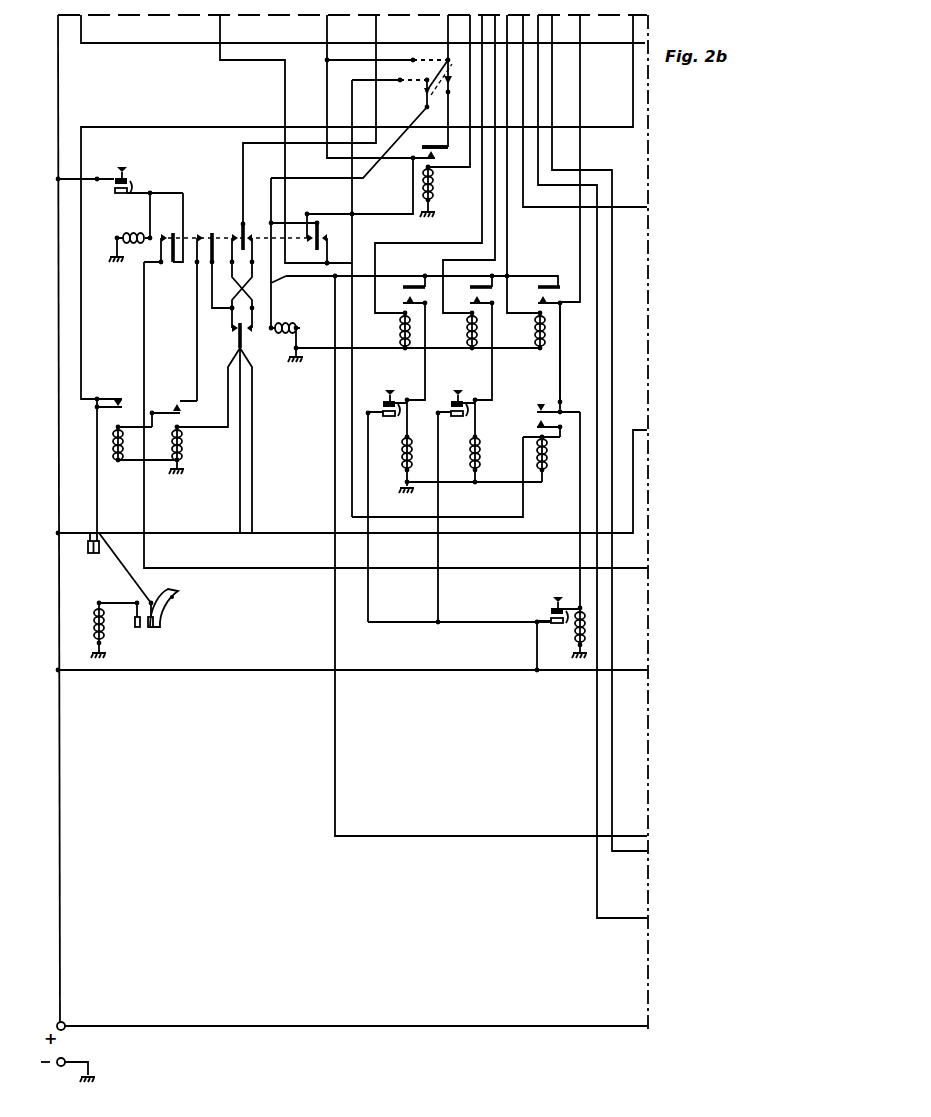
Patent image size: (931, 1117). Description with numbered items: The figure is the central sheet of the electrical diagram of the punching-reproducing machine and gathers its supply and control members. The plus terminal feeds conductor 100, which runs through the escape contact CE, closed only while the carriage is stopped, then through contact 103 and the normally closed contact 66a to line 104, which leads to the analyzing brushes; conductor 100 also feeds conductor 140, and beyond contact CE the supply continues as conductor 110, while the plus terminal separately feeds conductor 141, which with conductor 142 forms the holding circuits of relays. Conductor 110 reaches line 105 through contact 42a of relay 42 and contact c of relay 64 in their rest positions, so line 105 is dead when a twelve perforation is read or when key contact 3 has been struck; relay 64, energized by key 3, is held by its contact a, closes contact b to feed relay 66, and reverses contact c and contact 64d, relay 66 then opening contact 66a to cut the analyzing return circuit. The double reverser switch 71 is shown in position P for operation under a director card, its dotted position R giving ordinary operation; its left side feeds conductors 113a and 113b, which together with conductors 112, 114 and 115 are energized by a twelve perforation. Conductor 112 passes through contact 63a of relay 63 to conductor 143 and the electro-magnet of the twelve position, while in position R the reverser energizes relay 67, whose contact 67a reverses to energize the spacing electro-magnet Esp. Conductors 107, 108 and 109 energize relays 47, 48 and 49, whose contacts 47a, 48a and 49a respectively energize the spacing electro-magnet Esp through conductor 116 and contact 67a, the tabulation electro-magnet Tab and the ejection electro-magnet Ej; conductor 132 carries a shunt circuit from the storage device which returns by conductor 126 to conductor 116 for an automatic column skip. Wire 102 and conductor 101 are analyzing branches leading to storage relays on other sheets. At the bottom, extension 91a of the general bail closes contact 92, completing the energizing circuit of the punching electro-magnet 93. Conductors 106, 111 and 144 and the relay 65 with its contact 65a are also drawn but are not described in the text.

The conductor 100 is at (61, 835).
The conductor 141 is at (198, 1026).
The conductor 132 is at (117, 43).
The conductor 115 is at (285, 92).
The conductor 143 is at (327, 92).
The line 105 is at (243, 148).
The line 104 is at (82, 325).
The conductor 126 is at (578, 75).
The conductor 112 is at (448, 120).
The connecting line 111 is at (458, 170).
The conductor 109 is at (440, 237).
The conductor 108 is at (443, 260).
The conductor 107 is at (507, 240).
The connecting line 106 is at (553, 207).
The wire 102 is at (611, 918).
The conductor 101 is at (613, 762).
The conductor 114 is at (335, 305).
The conductor 113b is at (528, 277).
The conductor 113a is at (364, 182).
The reverser position R is at (378, 289).
The double reverser switch 71 is at (425, 100).
The reverser position P is at (439, 88).
The contact 63a is at (437, 156).
The relay 63 is at (433, 190).
The connecting line 144 is at (375, 214).
The contact 64d is at (323, 221).
The reversing contact of relay 64 c is at (245, 228).
The contact of relay 64 b is at (199, 232).
The holding contact of relay 64 a is at (165, 232).
The relay 64 is at (134, 231).
The key contact 3 is at (119, 179).
The conductor 110 is at (183, 533).
The conductor 142 is at (246, 570).
The conductor 140 is at (172, 670).
The escape contact CE is at (94, 532).
The extension of general bail 91a is at (173, 613).
The contact 92 is at (142, 631).
The punching electro-magnet 93 is at (95, 612).
The contact 103 is at (97, 456).
The contact 66a is at (123, 390).
The contact of relay 65 65a is at (175, 403).
The relay 66 is at (117, 462).
The relay 65 is at (184, 448).
The contact 42a is at (243, 335).
The relay 42 is at (288, 325).
The contact 49a is at (399, 339).
The contact 48a is at (467, 339).
The contact 47a is at (535, 349).
The conductor 116 is at (561, 358).
The relay 49 is at (399, 328).
The relay 48 is at (466, 328).
The relay 47 is at (534, 328).
The ejection key and electro-magnet Ej is at (405, 436).
The tabulation key and electro-magnet Tab is at (473, 436).
The contact 67a is at (537, 413).
The relay 67 is at (546, 462).
The spacing key and electro-magnet Esp is at (477, 541).